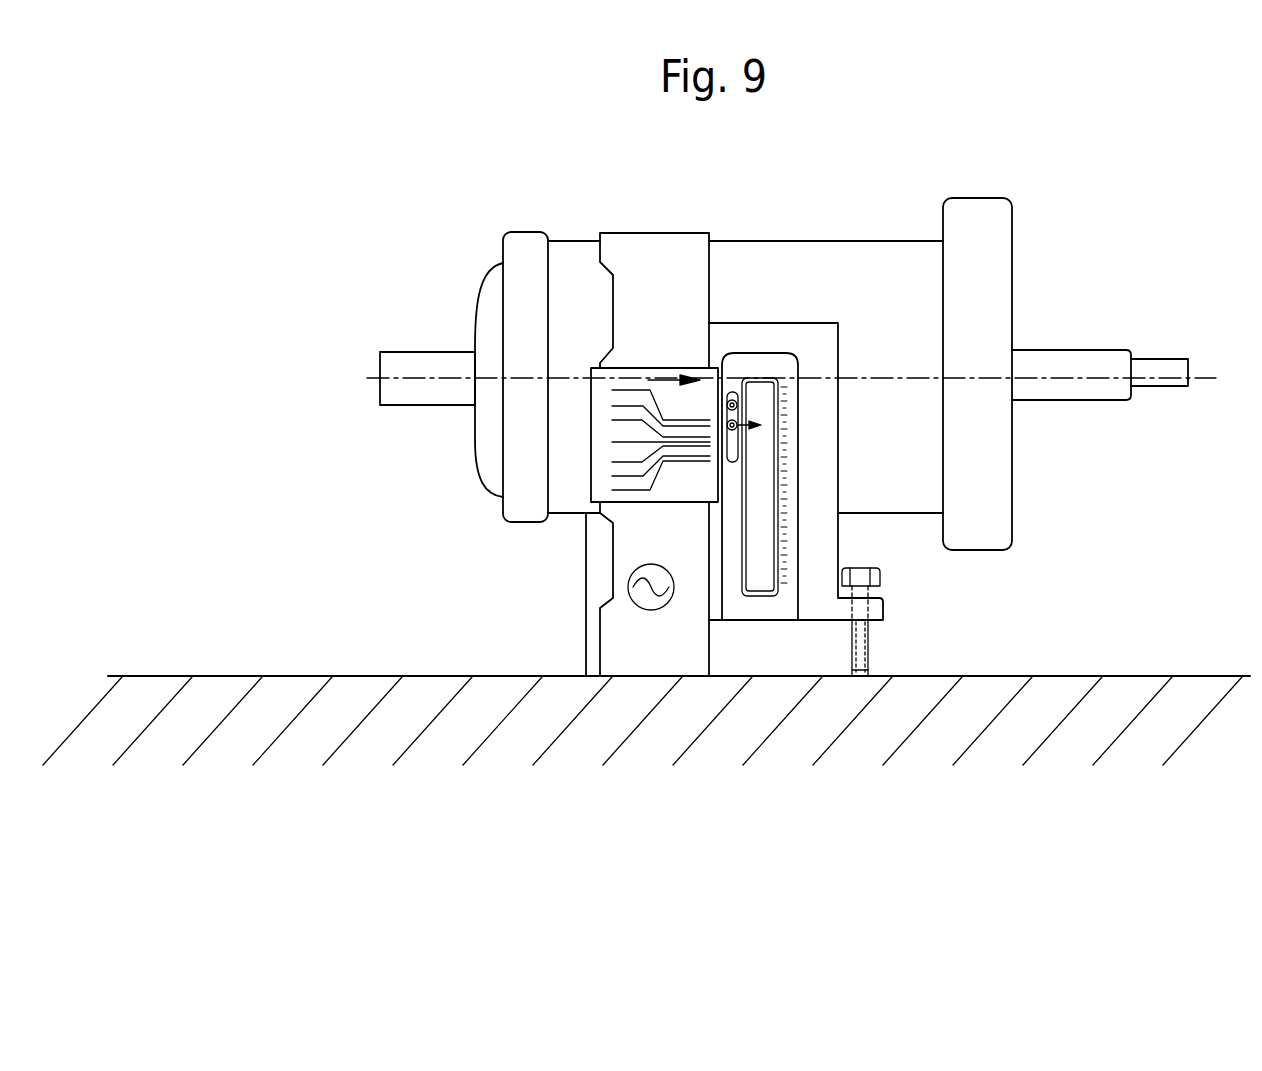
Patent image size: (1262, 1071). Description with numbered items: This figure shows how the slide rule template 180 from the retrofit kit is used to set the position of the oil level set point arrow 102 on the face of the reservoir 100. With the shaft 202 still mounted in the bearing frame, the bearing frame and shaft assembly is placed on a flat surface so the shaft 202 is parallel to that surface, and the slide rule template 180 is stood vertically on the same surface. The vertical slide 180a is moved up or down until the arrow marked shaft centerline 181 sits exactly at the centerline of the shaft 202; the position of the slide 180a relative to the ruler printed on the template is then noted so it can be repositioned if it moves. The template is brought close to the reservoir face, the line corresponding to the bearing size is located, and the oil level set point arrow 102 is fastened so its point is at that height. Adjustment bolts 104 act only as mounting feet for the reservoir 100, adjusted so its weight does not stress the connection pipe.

The reservoir 100 is at (825, 347).
The oil level set point arrow 102 is at (750, 423).
The adjustment bolts 104 is at (873, 645).
The slide rule template 180 is at (683, 241).
The vertical slide 180a is at (677, 492).
The shaft centerline arrow 181 is at (693, 372).
The shaft 202 is at (415, 357).